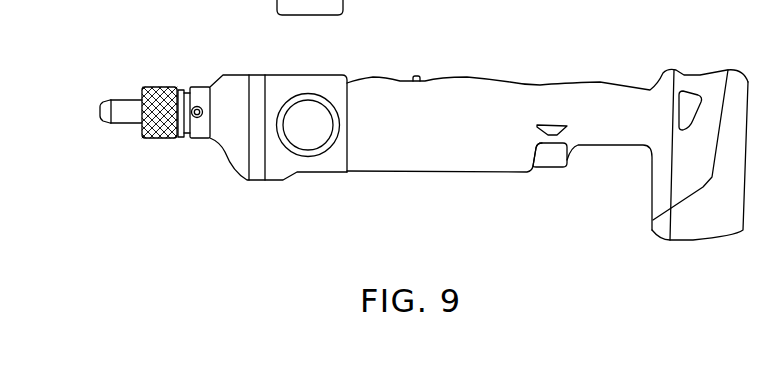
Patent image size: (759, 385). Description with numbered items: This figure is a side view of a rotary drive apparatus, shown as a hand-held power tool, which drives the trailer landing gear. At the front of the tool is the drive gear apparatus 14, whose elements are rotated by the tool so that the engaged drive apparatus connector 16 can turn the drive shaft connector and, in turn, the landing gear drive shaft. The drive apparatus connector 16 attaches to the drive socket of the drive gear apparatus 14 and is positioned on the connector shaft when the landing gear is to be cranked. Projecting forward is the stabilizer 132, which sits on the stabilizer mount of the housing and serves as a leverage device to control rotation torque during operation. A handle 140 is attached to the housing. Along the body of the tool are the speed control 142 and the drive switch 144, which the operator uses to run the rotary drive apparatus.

The drive gear apparatus 14 is at (245, 180).
The drive apparatus connector 16 is at (170, 138).
The stabilizer 132 is at (127, 124).
The handle 140 is at (310, 157).
The speed control 142 is at (417, 75).
The drive switch 144 is at (550, 167).